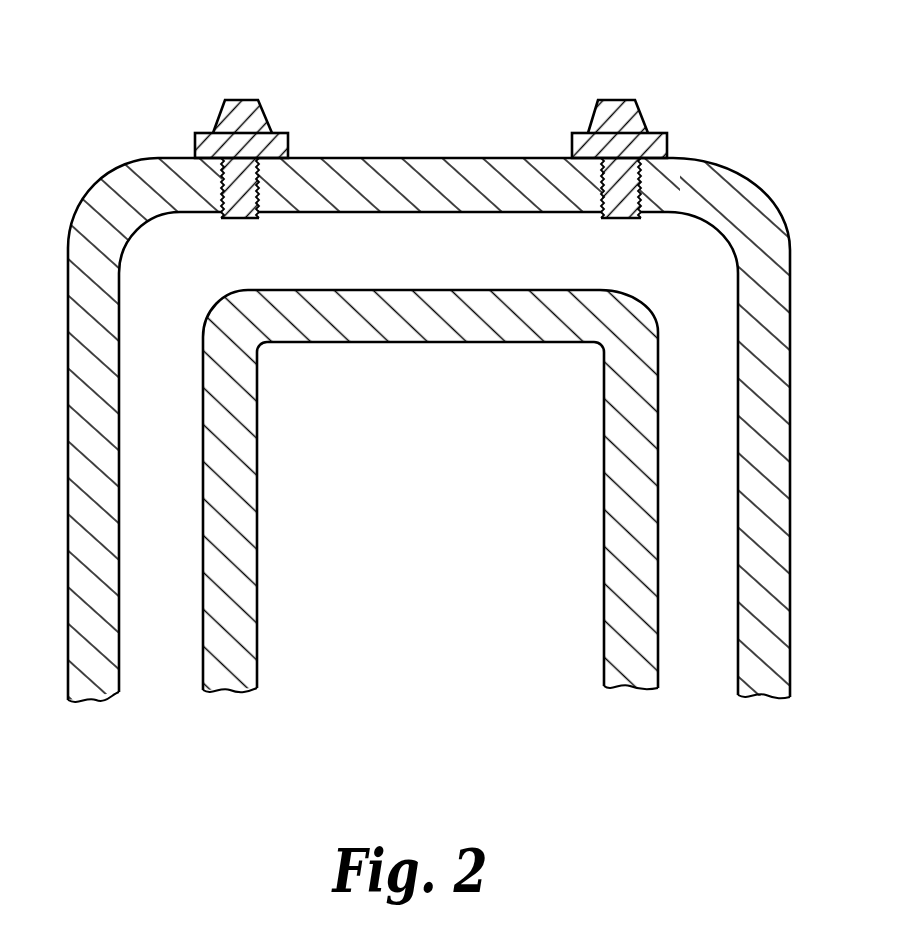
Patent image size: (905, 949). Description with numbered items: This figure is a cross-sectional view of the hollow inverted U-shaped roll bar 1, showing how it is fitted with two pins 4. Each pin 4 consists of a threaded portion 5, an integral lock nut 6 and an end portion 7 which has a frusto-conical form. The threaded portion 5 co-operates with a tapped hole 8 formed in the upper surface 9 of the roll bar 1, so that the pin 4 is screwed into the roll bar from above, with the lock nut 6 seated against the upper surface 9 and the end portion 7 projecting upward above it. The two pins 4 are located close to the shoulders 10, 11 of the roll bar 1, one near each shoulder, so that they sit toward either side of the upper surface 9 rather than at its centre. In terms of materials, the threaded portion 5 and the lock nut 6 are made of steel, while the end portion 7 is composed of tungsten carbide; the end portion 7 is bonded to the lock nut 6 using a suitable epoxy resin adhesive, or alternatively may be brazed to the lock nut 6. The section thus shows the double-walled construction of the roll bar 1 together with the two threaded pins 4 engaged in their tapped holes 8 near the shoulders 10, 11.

The roll bar 1 is at (428, 351).
The pin 4 is at (414, 144).
The threaded portion 5 is at (410, 194).
The lock nut 6 is at (278, 148).
The end portion 7 is at (238, 100).
The tapped hole 8 is at (260, 202).
The upper surface 9 is at (390, 157).
The shoulder 10 is at (113, 182).
The shoulder 11 is at (757, 183).